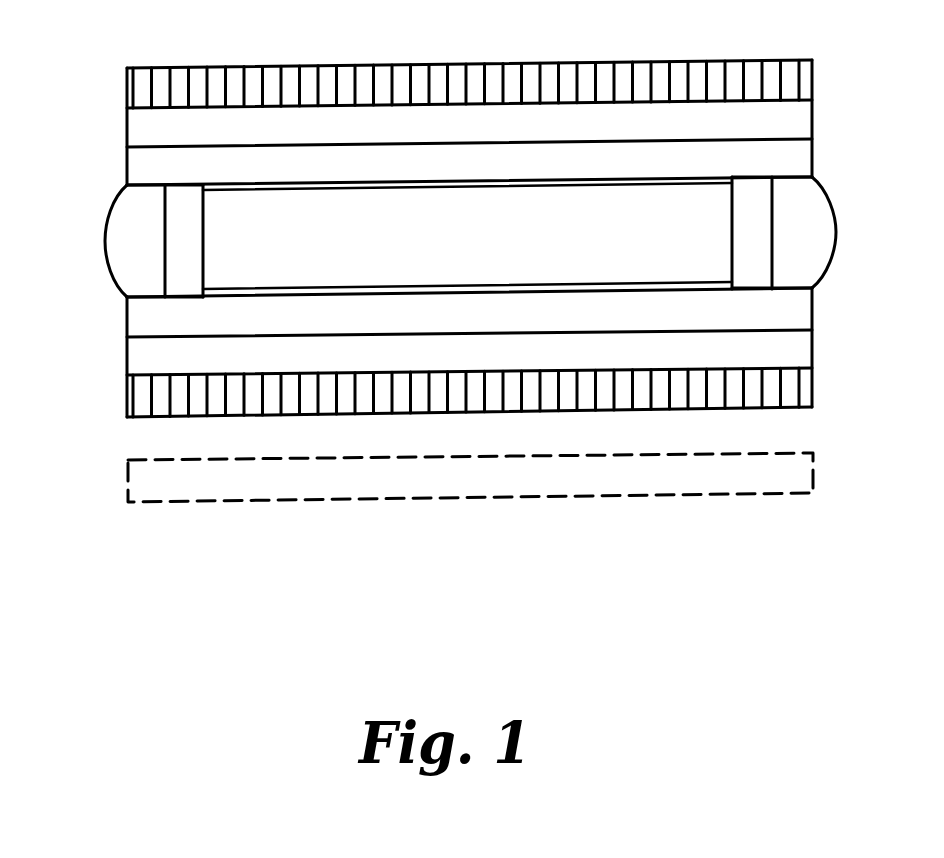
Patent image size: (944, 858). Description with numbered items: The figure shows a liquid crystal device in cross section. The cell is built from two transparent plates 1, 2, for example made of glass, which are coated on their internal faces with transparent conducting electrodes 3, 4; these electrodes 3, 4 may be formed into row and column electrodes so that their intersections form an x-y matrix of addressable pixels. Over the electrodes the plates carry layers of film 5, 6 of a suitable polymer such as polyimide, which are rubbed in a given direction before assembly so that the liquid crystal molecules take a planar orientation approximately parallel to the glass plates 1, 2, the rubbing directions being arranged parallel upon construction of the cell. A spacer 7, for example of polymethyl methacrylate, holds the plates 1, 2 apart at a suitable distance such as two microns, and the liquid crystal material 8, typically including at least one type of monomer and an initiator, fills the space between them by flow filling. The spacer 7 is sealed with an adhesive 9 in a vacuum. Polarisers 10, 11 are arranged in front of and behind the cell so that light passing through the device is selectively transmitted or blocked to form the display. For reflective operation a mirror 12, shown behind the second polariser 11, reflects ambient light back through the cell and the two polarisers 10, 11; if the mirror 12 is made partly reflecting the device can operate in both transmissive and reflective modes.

The transparent plate 1 is at (253, 120).
The transparent plate 2 is at (223, 365).
The transparent conducting electrode 3 is at (518, 150).
The transparent conducting electrode 4 is at (618, 320).
The film 5 is at (637, 185).
The film 6 is at (703, 285).
The spacer 7 is at (757, 234).
The liquid crystal material 8 is at (213, 230).
The adhesive 9 is at (138, 268).
The polariser 10 is at (168, 78).
The polariser 11 is at (154, 397).
The mirror 12 is at (360, 500).